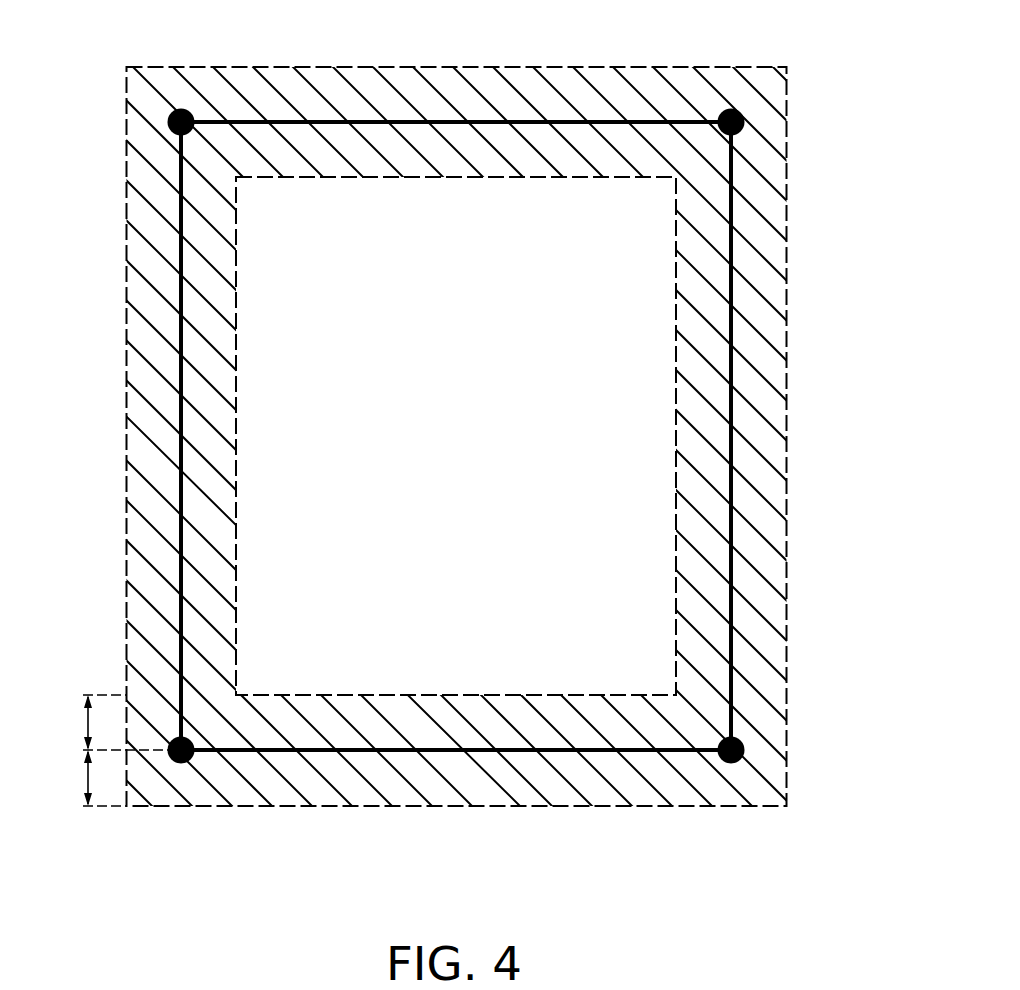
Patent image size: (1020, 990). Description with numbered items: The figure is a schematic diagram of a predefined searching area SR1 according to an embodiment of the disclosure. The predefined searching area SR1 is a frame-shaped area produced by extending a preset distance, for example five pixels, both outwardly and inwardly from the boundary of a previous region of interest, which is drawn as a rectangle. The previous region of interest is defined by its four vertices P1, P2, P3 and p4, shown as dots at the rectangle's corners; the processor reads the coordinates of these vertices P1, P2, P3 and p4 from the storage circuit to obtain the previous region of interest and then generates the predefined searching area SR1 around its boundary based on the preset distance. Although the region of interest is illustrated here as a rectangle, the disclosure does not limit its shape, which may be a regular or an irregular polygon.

The predefined searching area SR1 is at (718, 67).
The vertex P1 is at (745, 121).
The vertex P2 is at (168, 120).
The vertex P3 is at (185, 763).
The vertex p4 is at (744, 748).